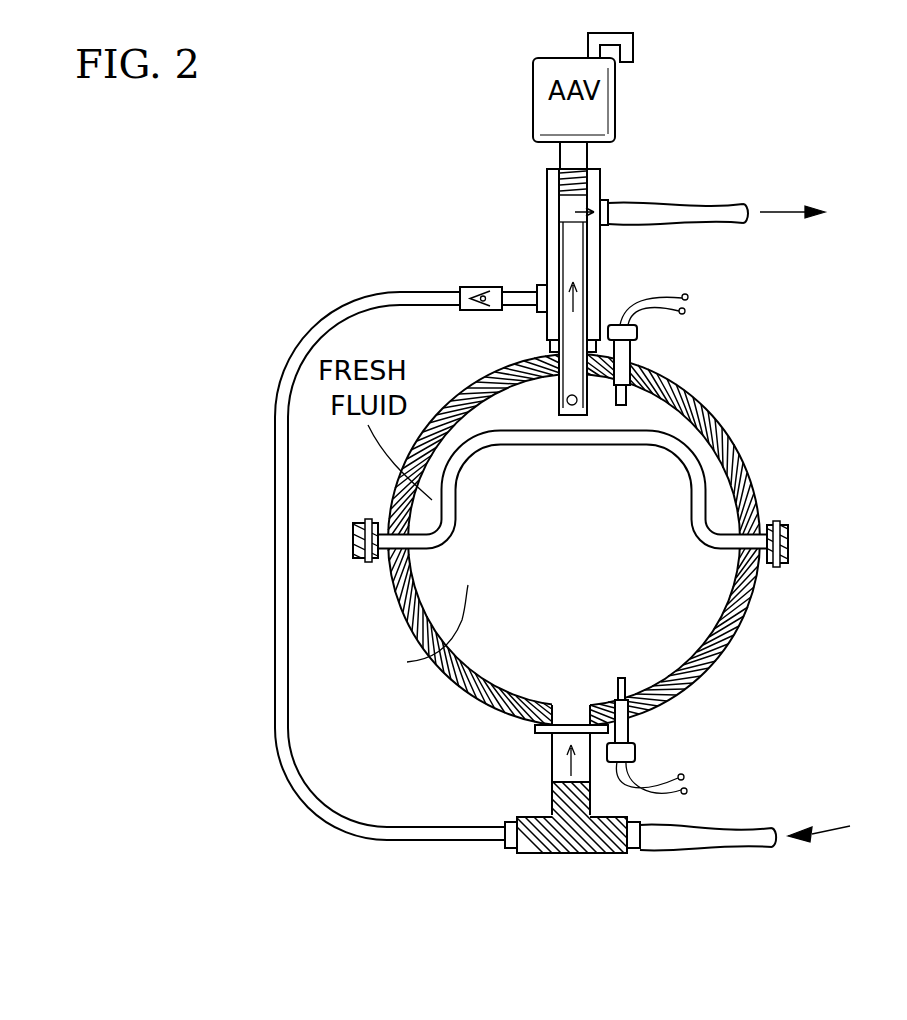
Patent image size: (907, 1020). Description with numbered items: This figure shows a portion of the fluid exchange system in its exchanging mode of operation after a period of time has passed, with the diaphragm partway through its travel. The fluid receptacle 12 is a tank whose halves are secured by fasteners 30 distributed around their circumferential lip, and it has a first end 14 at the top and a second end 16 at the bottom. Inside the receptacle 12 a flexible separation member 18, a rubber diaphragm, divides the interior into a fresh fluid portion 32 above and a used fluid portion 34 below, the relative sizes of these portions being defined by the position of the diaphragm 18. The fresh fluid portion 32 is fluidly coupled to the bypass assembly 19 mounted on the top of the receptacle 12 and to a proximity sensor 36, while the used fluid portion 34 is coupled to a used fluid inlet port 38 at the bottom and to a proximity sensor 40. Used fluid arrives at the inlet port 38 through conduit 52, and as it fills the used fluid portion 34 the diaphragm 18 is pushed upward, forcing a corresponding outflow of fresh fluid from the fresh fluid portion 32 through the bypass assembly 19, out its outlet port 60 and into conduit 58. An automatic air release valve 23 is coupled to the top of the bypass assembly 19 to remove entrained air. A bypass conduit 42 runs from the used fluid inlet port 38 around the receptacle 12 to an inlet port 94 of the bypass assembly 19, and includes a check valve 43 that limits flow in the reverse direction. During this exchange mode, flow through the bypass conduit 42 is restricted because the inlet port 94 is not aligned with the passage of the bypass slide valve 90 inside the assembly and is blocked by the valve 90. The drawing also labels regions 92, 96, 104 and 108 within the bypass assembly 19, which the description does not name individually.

The fluid receptacle 12 is at (768, 598).
The first end 14 is at (665, 377).
The second end 16 is at (485, 705).
The separation member 18 is at (705, 503).
The bypass assembly 19 is at (583, 271).
The automatic air release valve 23 is at (636, 46).
The fasteners 30 is at (788, 528).
The fresh fluid portion 32 is at (705, 465).
The used fluid portion 34 is at (693, 600).
The proximity sensor 36 is at (640, 330).
The used fluid inlet port 38 is at (572, 722).
The proximity sensor 40 is at (637, 755).
The bypass conduit 42 is at (358, 296).
The check valve 43 is at (470, 287).
The conduit 52 is at (750, 828).
The conduit 58 is at (738, 204).
The outlet port 60 is at (604, 203).
The bypass slide valve 90 is at (573, 287).
The threaded portion 92 is at (592, 187).
The inlet port 94 is at (553, 306).
The valve chamber 96 is at (573, 200).
The tube outlet 104 is at (560, 400).
The housing wall 108 is at (593, 243).